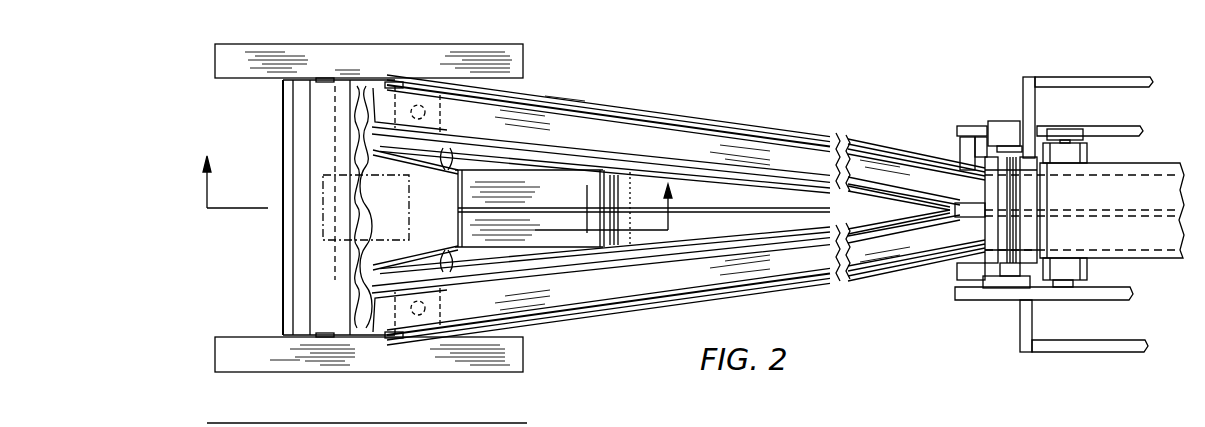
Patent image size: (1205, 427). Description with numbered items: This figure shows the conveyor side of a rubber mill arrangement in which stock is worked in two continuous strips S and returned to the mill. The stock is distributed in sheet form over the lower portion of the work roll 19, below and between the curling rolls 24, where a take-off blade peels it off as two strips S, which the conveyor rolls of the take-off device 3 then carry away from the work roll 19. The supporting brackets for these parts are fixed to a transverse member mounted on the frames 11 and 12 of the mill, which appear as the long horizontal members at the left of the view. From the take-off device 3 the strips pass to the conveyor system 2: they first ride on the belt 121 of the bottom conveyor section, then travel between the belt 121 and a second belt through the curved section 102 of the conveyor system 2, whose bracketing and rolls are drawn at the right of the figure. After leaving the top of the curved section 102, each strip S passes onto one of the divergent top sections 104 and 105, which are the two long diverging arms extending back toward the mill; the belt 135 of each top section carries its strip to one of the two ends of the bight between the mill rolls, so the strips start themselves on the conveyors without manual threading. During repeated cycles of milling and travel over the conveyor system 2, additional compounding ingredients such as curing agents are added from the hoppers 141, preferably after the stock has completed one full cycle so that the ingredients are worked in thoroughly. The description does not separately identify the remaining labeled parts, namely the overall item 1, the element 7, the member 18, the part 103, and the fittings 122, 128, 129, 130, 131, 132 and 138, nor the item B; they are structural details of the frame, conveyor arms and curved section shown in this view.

The apparatus 1 is at (196, 87).
The conveyor system 2 is at (713, 113).
The take-off device 3 is at (437, 184).
The housing 7 is at (322, 200).
The frame 11 is at (229, 367).
The frame 12 is at (215, 56).
The frame 18 is at (300, 238).
The work roll 19 is at (462, 266).
The curling roll 24 is at (452, 132).
The curved section 102 is at (1062, 50).
The upper strut 103 is at (749, 107).
The divergent top section 104 is at (616, 317).
The divergent top section 105 is at (660, 108).
The belt 121 is at (1167, 160).
The bearing block 122 is at (1087, 153).
The hub plate 128 is at (1013, 160).
The flange 129 is at (968, 165).
The block 130 is at (1010, 291).
The strut flange 131 is at (782, 127).
The pivot 132 is at (398, 82).
The belt 135 is at (573, 117).
The lower bracket 138 is at (1028, 354).
The hopper 141 is at (421, 105).
The belt B is at (352, 135).
The strip of stock S is at (610, 130).